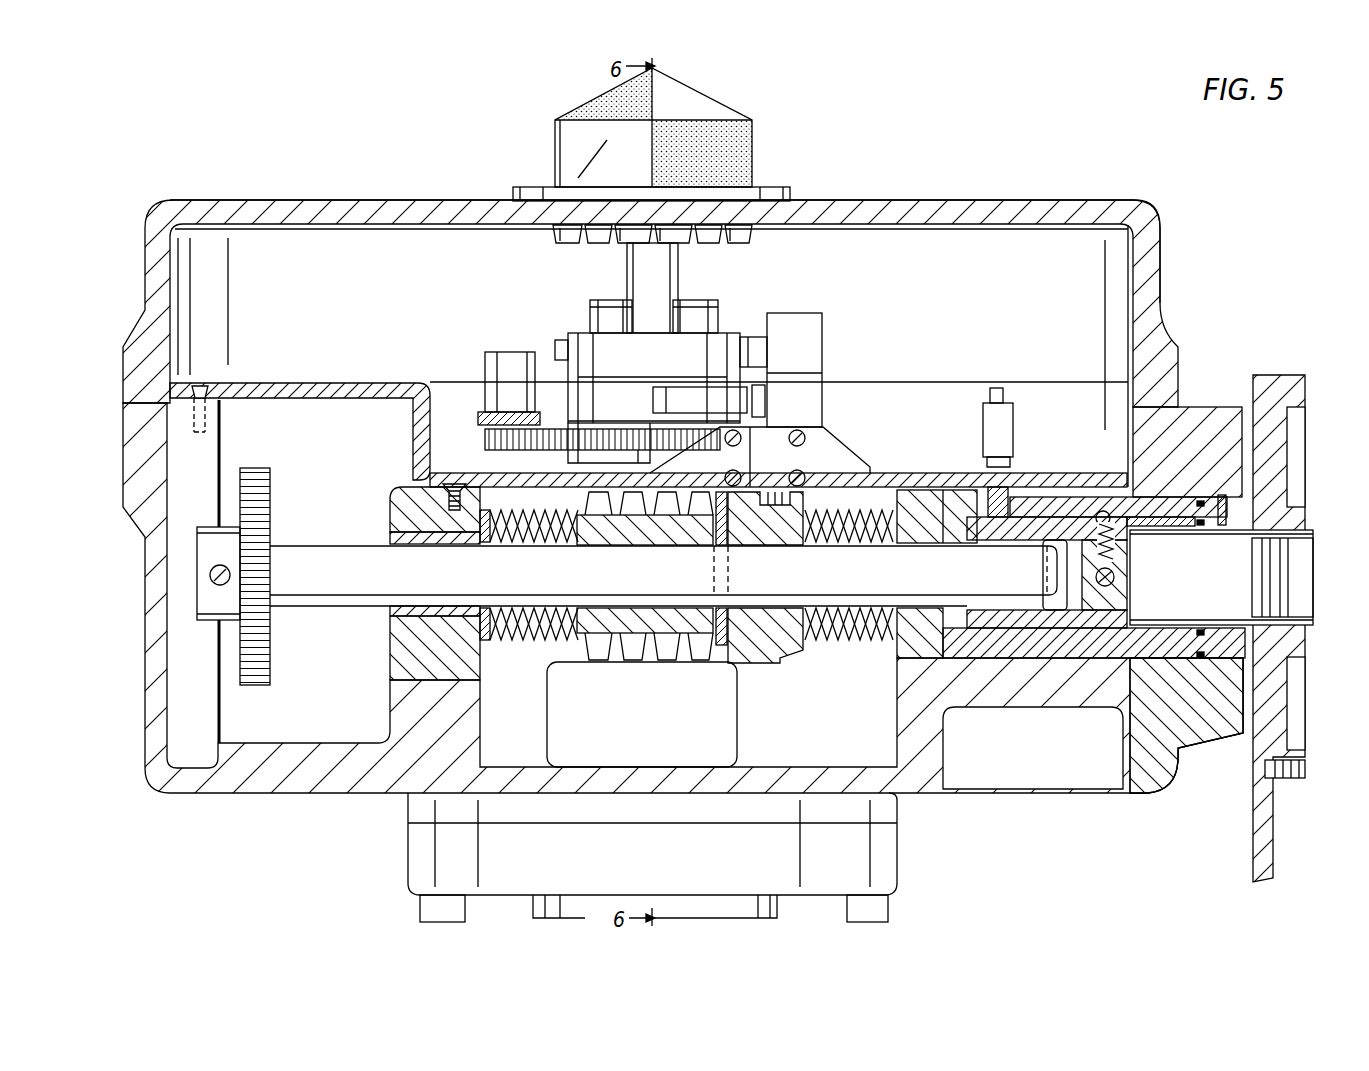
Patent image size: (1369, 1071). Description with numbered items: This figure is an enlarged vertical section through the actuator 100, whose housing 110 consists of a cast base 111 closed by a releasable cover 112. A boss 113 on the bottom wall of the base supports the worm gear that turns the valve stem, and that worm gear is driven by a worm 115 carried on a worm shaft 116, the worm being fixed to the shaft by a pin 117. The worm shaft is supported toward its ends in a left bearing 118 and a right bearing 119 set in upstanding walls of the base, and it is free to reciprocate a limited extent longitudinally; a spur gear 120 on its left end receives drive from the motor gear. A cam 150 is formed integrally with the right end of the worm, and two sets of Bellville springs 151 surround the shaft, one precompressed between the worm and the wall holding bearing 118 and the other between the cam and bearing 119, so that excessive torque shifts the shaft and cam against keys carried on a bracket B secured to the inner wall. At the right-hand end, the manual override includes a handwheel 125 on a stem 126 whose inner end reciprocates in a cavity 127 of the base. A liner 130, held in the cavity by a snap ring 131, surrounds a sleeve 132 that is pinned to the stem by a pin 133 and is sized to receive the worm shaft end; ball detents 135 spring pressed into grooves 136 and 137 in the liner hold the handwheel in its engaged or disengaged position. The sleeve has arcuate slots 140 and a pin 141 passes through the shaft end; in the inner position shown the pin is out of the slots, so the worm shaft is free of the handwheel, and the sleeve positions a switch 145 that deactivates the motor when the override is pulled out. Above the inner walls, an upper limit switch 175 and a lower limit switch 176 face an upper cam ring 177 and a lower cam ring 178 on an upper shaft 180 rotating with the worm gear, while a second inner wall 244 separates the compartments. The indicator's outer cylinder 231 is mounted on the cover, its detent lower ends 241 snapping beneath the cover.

The actuator 100 is at (1192, 249).
The housing 110 is at (1015, 200).
The base 111 is at (310, 794).
The cover 112 is at (333, 212).
The boss 113 is at (679, 748).
The worm 115 is at (650, 660).
The worm shaft 116 is at (330, 608).
The pin 117 is at (720, 645).
The bearing 118 is at (400, 533).
The bearing 119 is at (925, 500).
The spur gear 120 is at (268, 482).
The handwheel 125 is at (1296, 437).
The stem 126 is at (1183, 600).
The cavity 127 is at (1075, 660).
The liner 130 is at (1078, 660).
The snap ring 131 is at (1240, 505).
The sleeve 132 is at (1000, 668).
The pin 133 is at (1130, 570).
The ball detents 135 is at (1138, 430).
The groove 136 is at (1175, 490).
The groove 137 is at (1099, 511).
The arcuate slots 140 is at (1001, 541).
The pin 141 is at (1025, 640).
The switch 145 is at (484, 365).
The cam 150 is at (806, 665).
The Bellville springs 151 is at (530, 642).
The upper limit switch 175 is at (822, 335).
The lower limit switch 176 is at (826, 410).
The upper cam ring 177 is at (730, 333).
The lower cam ring 178 is at (568, 392).
The upper shaft 180 is at (626, 266).
The outer cylinder 231 is at (736, 110).
The lower ends 241 is at (755, 237).
The second inner wall 244 is at (370, 383).
The bracket B is at (851, 453).